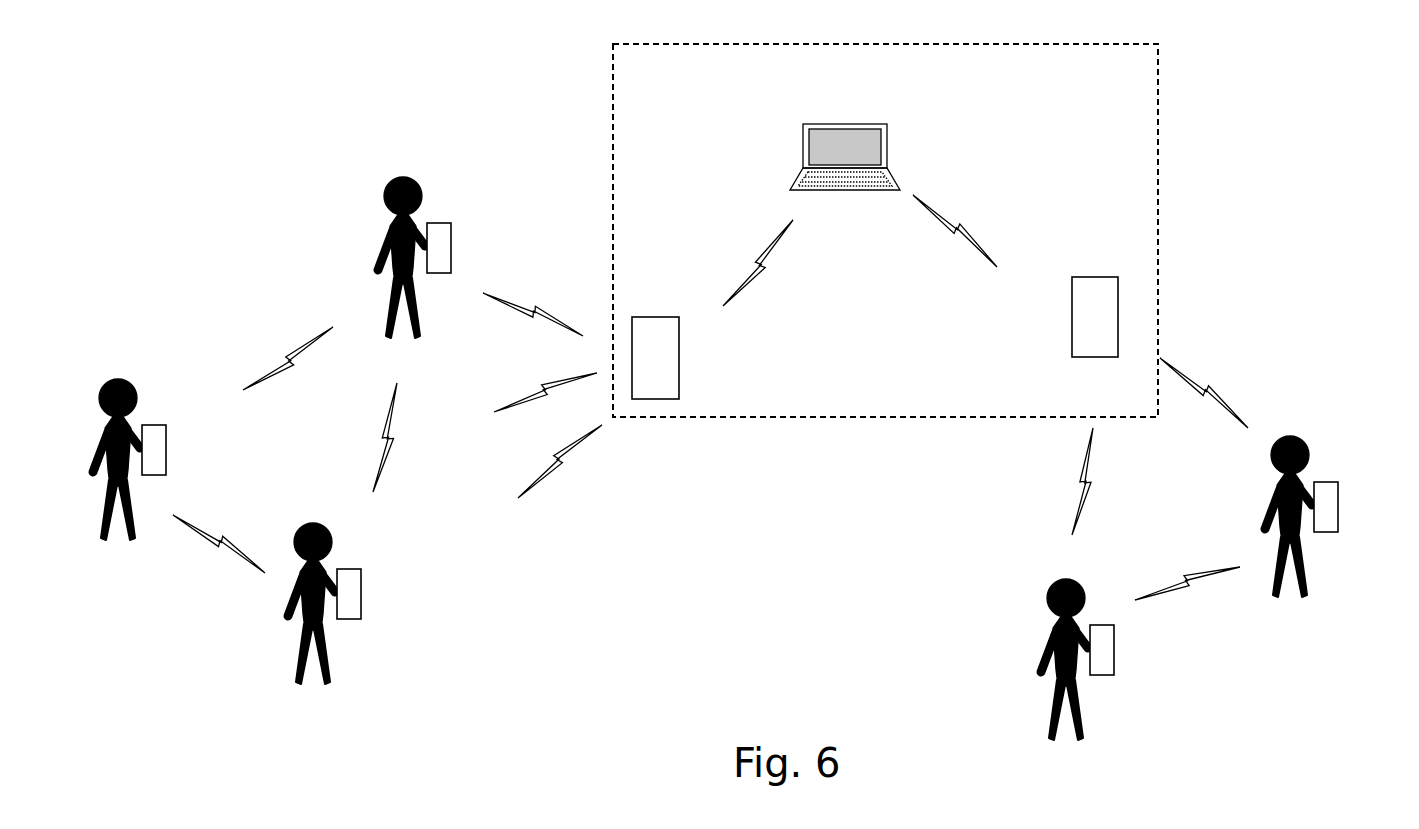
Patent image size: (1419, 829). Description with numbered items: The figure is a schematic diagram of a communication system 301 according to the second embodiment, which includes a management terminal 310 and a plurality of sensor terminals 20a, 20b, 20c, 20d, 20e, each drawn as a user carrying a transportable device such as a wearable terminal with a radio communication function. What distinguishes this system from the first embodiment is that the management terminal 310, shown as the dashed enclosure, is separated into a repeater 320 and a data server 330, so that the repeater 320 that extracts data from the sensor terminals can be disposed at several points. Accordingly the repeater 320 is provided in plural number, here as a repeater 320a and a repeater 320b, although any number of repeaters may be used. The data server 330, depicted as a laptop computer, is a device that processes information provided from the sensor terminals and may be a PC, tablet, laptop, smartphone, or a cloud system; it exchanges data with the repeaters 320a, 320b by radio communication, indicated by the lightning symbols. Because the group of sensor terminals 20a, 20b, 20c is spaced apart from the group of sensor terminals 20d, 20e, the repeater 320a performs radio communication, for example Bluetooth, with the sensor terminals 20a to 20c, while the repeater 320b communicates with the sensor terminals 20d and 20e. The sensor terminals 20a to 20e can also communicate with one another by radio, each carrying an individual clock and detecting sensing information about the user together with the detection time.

The communication system 301 is at (185, 61).
The management terminal 310 is at (753, 392).
The repeater 320 is at (890, 312).
The repeater 320a is at (643, 317).
The repeater 320b is at (1127, 250).
The data server 330 is at (845, 123).
The sensor terminal 20a is at (167, 459).
The sensor terminal 20b is at (362, 603).
The sensor terminal 20c is at (451, 257).
The sensor terminal 20d is at (1115, 659).
The sensor terminal 20e is at (1339, 516).